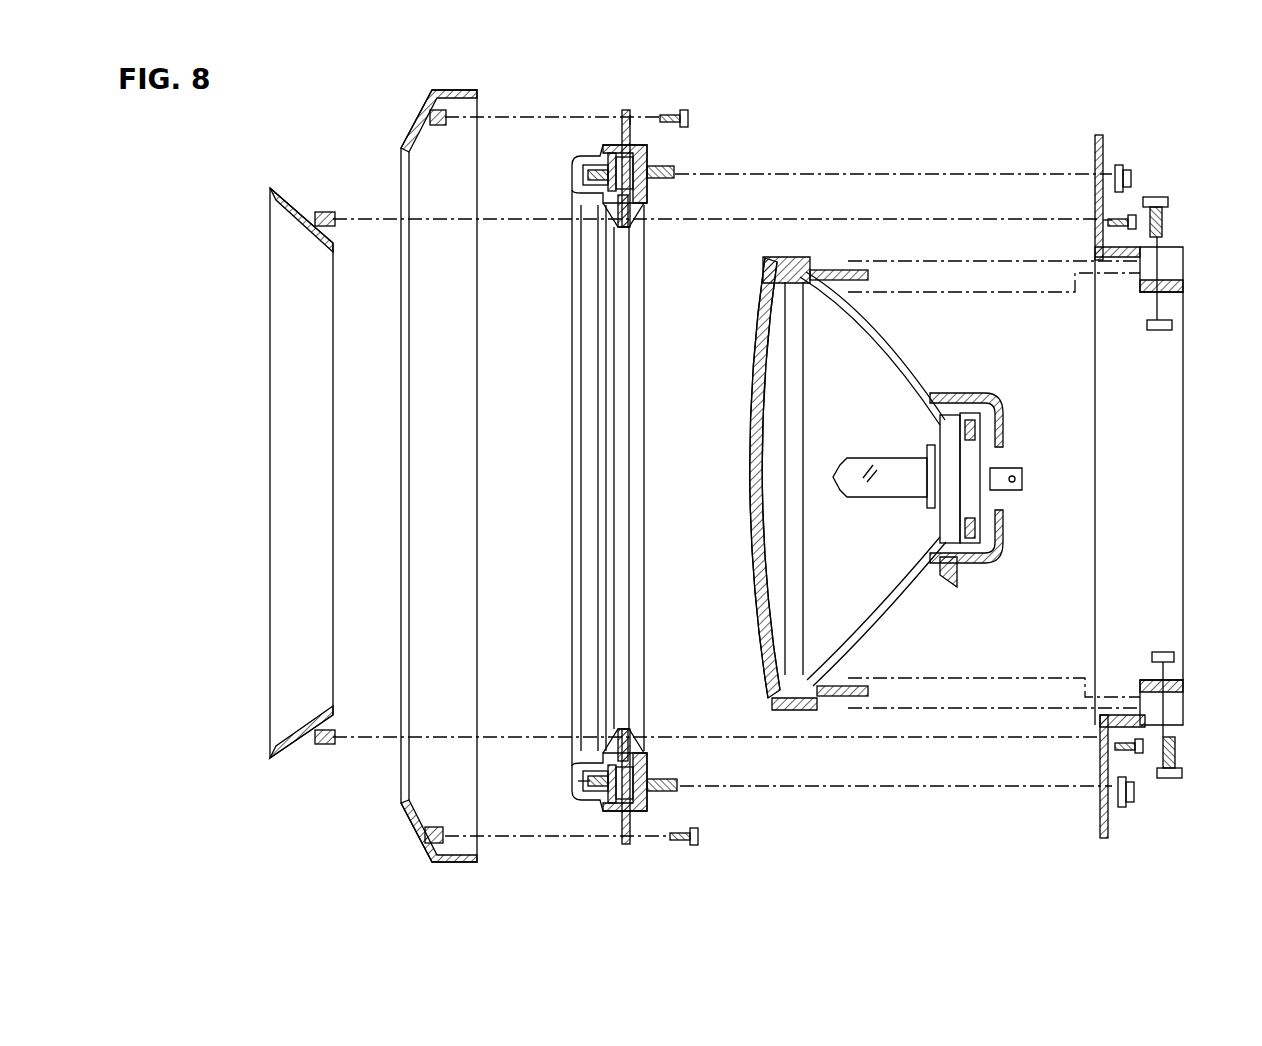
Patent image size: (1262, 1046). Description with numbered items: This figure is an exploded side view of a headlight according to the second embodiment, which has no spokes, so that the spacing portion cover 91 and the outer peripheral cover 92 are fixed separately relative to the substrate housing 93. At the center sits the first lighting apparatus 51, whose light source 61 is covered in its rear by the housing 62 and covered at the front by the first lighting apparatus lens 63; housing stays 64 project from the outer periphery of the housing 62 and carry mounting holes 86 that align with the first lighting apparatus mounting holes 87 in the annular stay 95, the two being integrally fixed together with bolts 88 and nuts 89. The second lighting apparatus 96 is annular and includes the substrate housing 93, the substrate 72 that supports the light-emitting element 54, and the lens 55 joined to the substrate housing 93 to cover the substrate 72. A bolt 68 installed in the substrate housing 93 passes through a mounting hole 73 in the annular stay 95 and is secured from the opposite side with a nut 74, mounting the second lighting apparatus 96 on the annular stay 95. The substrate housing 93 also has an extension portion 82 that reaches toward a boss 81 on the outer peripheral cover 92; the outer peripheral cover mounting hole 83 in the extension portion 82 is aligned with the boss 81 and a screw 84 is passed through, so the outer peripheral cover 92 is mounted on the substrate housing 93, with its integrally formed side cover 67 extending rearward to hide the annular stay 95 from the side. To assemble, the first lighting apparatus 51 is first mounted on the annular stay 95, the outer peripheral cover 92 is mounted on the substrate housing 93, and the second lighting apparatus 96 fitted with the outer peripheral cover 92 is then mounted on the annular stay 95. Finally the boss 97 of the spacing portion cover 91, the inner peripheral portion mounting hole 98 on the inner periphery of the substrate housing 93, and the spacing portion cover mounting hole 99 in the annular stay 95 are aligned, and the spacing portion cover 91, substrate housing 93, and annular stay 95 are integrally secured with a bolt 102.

The first lighting apparatus 51 is at (840, 491).
The light-emitting element 54 is at (592, 172).
The lens 55 is at (578, 785).
The light source 61 is at (875, 456).
The housing 62 is at (905, 372).
The first lighting apparatus lens 63 is at (742, 470).
The housing stay 64 is at (822, 258).
The side cover 67 is at (455, 862).
The bolt 68 is at (632, 172).
The substrate 72 is at (580, 790).
The mounting hole 73 is at (1097, 178).
The nut 74 is at (1130, 170).
The boss 81 is at (445, 120).
The extension portion 82 is at (635, 128).
The outer peripheral cover mounting hole 83 is at (633, 125).
The screw 84 is at (688, 117).
The mounting hole 86 is at (848, 275).
The first lighting apparatus mounting hole 87 is at (1163, 290).
The bolt 88 is at (1168, 202).
The nut 89 is at (1158, 330).
The spacing portion cover 91 is at (281, 760).
The outer peripheral cover 92 is at (405, 147).
The substrate housing 93 is at (618, 200).
The annular stay 95 is at (1104, 150).
The second lighting apparatus 96 is at (572, 570).
The boss 97 is at (325, 212).
The inner peripheral portion mounting hole 98 is at (605, 205).
The spacing portion cover mounting hole 99 is at (1097, 222).
The bolt 102 is at (1132, 215).